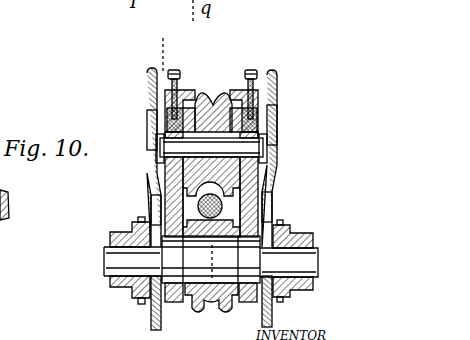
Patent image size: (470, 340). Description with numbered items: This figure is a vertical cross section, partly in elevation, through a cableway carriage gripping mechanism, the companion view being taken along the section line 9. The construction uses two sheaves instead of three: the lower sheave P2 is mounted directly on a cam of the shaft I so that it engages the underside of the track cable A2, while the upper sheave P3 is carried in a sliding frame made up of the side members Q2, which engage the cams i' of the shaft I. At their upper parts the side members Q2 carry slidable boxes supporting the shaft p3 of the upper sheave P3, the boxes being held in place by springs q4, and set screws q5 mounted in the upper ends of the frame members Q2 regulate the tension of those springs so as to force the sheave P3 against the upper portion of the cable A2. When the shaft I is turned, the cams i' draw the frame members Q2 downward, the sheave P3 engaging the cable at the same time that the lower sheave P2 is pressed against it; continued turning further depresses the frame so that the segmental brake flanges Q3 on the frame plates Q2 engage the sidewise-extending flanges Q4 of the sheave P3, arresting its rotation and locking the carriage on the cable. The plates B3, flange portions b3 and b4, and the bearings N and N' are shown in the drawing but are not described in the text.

The side plate B3 is at (298, 53).
The side plate flange b3 is at (306, 113).
The set screws q5 is at (174, 70).
The segmental flanges Q3 is at (186, 98).
The springs q4 is at (167, 117).
The upper sheave P3 is at (211, 112).
The shaft p3 is at (278, 134).
The side members Q2 is at (323, 142).
The flanges Q4 is at (332, 167).
The track cable A2 is at (222, 203).
The plate bend b4 is at (333, 194).
The cams i' is at (208, 275).
The shaft I is at (310, 262).
The bearing N is at (120, 267).
The bearing N' is at (302, 253).
The lower sheave P2 is at (200, 306).
The section line 9 is at (122, 55).